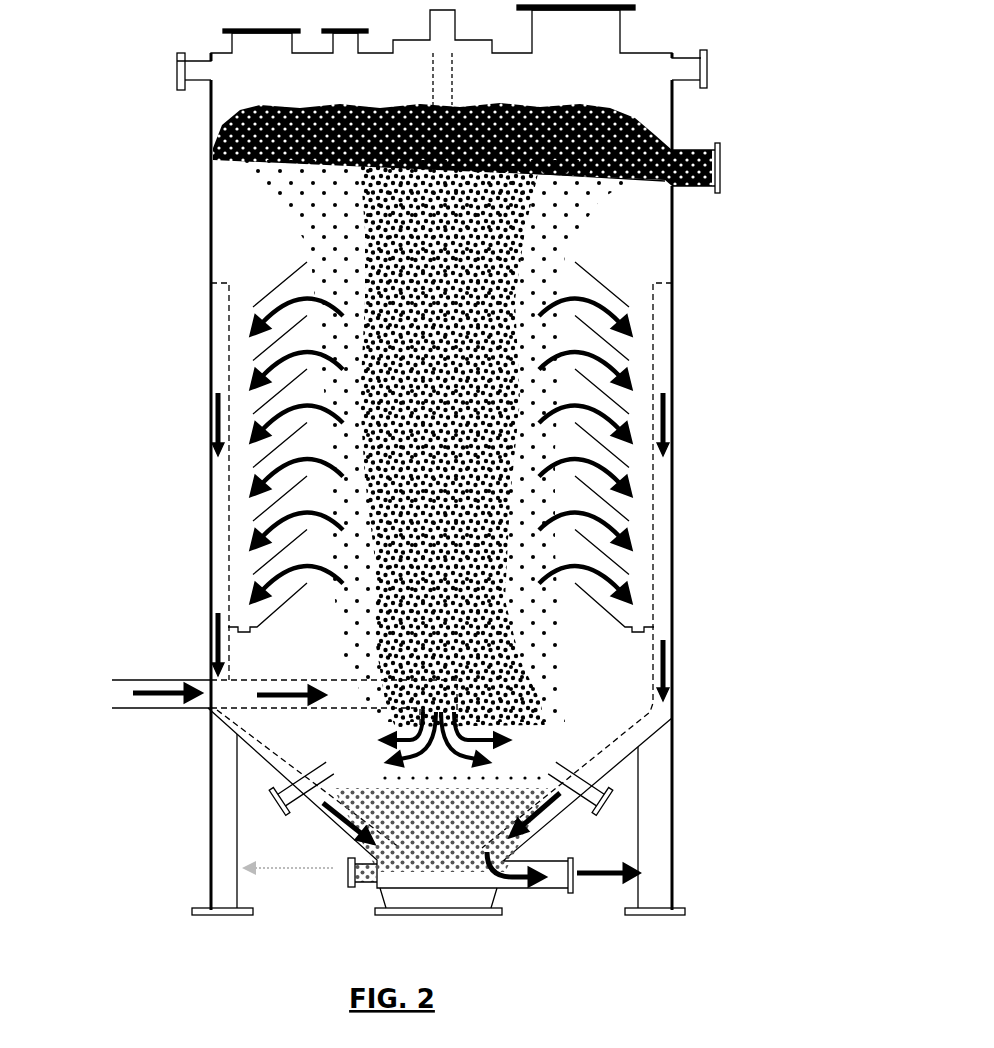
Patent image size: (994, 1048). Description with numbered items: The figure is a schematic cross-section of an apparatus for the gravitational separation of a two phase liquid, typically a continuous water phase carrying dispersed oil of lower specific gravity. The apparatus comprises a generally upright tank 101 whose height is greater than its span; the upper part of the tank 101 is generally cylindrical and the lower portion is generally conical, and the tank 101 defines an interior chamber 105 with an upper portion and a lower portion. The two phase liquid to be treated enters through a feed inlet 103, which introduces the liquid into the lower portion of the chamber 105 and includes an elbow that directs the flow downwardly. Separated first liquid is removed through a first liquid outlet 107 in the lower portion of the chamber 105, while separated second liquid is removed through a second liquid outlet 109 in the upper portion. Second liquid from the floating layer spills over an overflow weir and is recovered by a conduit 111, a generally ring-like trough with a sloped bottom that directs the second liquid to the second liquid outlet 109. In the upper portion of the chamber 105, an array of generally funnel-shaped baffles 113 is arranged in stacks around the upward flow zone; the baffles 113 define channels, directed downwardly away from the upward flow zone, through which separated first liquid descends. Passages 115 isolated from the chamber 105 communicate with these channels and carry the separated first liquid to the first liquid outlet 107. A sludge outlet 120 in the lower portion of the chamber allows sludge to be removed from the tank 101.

The tank 101 is at (212, 182).
The feed inlet 103 is at (137, 708).
The interior chamber 105 is at (245, 257).
The first liquid outlet 107 is at (575, 862).
The second liquid outlet 109 is at (722, 143).
The conduit 111 is at (610, 185).
The baffles 113 is at (307, 262).
The passages 115 is at (658, 518).
The sludge outlet 120 is at (350, 878).